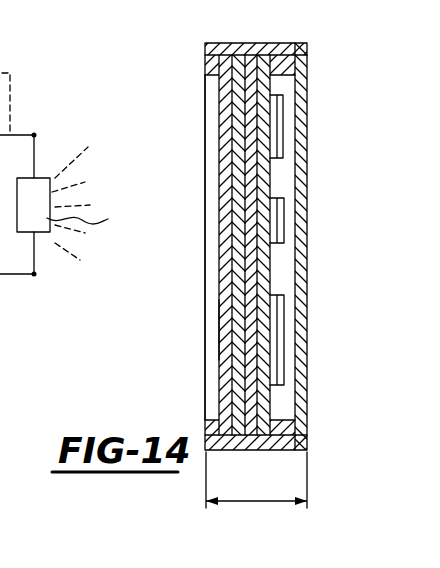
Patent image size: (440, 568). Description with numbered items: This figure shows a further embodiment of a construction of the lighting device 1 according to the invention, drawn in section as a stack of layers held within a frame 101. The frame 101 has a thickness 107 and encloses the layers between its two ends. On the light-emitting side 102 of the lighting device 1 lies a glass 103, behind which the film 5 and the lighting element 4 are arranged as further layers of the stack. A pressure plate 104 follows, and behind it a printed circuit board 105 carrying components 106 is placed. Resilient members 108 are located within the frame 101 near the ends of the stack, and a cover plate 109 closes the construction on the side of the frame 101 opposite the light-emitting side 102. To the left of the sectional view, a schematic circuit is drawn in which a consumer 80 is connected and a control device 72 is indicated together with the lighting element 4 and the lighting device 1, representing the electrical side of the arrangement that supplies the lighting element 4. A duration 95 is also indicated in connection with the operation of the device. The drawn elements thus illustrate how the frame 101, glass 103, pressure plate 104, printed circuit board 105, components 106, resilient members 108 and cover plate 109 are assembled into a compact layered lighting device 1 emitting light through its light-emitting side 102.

The lighting device 1 is at (104, 165).
The lighting element 4 is at (246, 165).
The film 5 is at (227, 118).
The control device 72 is at (60, 132).
The consumer 80 is at (46, 247).
The duration 95 is at (122, 560).
The frame 101 is at (246, 48).
The light-emitting side 102 is at (190, 274).
The glass 103 is at (233, 327).
The pressure plate 104 is at (253, 185).
The printed circuit board 105 is at (262, 264).
The components 106 is at (278, 125).
The thickness 107 is at (277, 503).
The resilient member 108 is at (280, 66).
The cover plate 109 is at (303, 312).